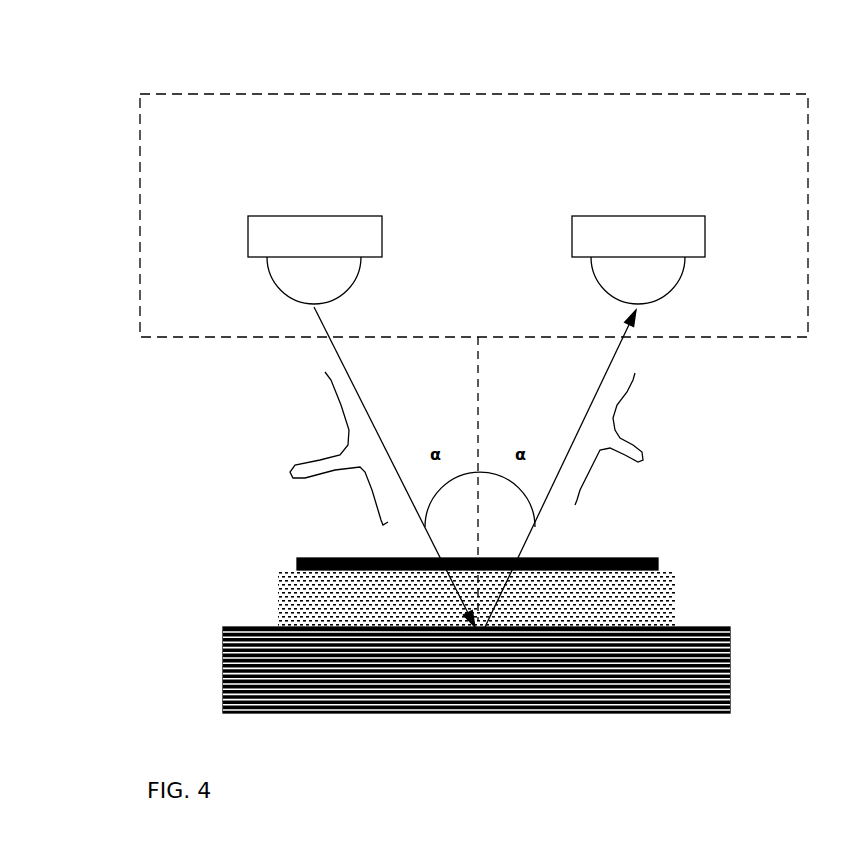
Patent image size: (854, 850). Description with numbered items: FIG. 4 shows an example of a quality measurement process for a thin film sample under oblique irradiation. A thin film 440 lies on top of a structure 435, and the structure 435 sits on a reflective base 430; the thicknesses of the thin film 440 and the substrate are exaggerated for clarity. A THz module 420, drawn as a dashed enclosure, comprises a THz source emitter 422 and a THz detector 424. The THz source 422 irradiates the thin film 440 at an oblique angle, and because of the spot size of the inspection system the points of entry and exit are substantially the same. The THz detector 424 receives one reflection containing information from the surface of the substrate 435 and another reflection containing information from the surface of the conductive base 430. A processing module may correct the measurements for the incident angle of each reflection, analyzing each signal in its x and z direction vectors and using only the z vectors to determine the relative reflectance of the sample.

The THz module 420 is at (140, 93).
The THz source emitter 422 is at (248, 216).
The THz detector 424 is at (572, 216).
The reflective base 430 is at (223, 675).
The structure 435 is at (278, 598).
The thin film 440 is at (312, 557).